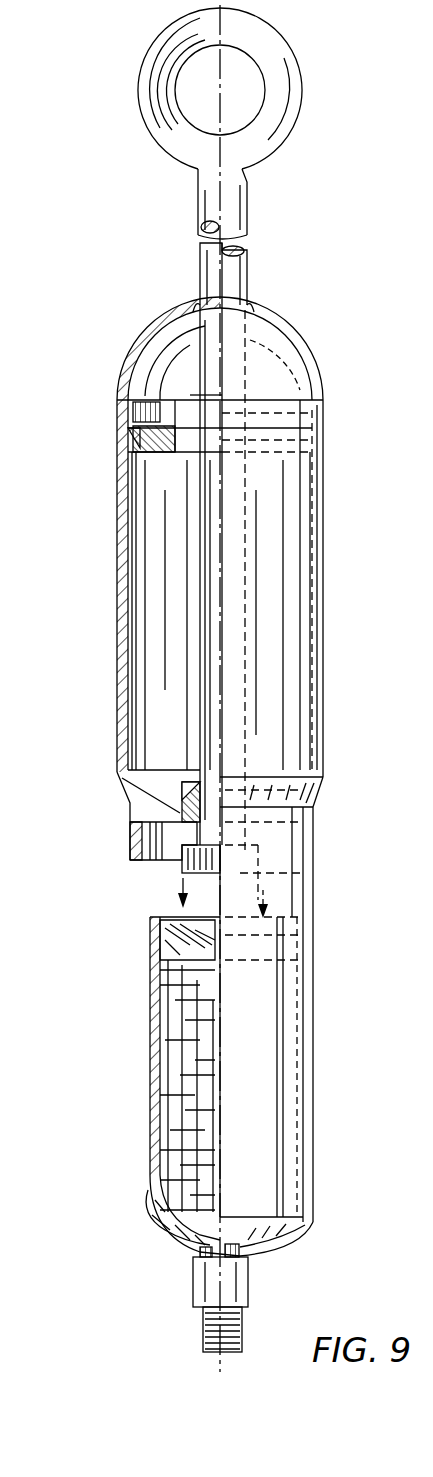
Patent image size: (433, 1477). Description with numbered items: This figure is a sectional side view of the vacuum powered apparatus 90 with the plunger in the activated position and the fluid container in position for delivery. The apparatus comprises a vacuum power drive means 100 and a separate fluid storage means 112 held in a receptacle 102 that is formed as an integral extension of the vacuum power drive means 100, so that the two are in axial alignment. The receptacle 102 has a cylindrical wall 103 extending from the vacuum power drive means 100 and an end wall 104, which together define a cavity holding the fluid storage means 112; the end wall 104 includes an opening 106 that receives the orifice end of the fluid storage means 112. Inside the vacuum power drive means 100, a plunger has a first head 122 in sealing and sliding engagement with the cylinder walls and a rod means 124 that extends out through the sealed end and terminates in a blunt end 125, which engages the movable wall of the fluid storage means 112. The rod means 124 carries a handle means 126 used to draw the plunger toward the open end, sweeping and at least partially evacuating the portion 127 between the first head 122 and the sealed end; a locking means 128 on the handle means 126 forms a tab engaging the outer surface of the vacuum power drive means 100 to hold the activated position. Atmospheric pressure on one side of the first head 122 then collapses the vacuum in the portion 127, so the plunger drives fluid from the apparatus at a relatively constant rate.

The vacuum powered apparatus 90 is at (355, 385).
The vacuum power drive means 100 is at (325, 583).
The receptacle 102 is at (220, 893).
The cylindrical wall 103 is at (312, 1003).
The end wall 104 is at (300, 1228).
The opening 106 is at (195, 1257).
The fluid storage means 112 is at (153, 1092).
The first head 122 is at (133, 413).
The rod means 124 is at (210, 720).
The blunt end 125 is at (183, 873).
The handle means 126 is at (302, 90).
The evacuated portion 127 is at (150, 568).
The locking means 128 is at (197, 297).